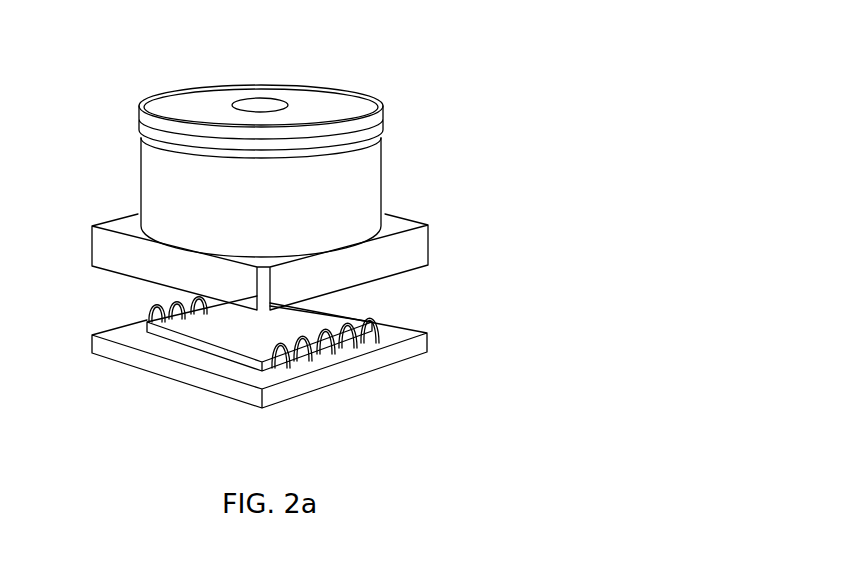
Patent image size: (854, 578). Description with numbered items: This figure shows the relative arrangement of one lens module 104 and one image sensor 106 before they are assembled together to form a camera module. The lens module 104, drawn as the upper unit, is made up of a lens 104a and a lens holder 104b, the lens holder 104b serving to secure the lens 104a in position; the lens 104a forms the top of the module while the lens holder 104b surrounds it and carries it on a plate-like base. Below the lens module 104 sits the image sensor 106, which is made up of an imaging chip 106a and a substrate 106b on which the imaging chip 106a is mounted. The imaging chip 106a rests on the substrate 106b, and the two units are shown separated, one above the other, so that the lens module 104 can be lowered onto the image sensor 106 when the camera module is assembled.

The lens module 104 is at (316, 165).
The lens 104a is at (318, 102).
The lens holder 104b is at (375, 158).
The image sensor 106 is at (256, 385).
The imaging chip 106a is at (240, 329).
The substrate 106b is at (377, 367).